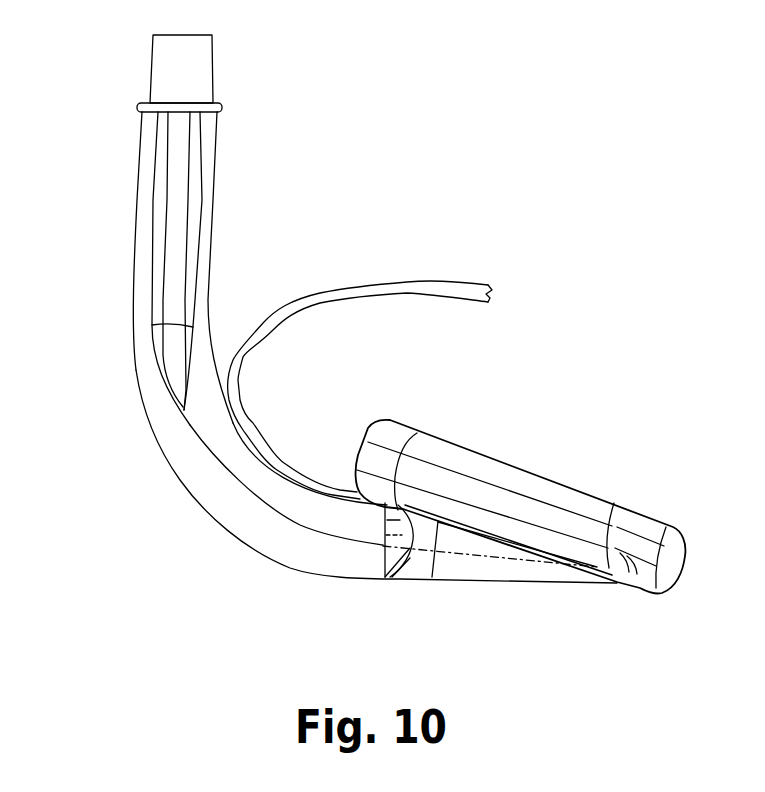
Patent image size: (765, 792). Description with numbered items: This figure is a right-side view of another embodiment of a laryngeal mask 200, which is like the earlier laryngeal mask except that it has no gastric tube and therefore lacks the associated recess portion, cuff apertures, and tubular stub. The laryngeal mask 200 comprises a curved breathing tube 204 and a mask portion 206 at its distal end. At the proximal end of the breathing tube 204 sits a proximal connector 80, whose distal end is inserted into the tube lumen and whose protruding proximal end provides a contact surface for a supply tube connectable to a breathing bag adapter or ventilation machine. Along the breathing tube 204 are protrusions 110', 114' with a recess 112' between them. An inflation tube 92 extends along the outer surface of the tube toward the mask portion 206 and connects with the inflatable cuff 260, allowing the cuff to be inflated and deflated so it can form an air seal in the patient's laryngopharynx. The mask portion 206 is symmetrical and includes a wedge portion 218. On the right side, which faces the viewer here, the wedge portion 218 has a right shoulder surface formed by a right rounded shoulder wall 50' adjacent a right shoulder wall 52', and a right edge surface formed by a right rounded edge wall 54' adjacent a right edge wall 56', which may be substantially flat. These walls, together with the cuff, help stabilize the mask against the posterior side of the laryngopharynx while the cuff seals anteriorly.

The proximal connector 80 is at (140, 45).
The inflation tube 92 is at (468, 283).
The protrusion 110' is at (136, 268).
The recess 112' is at (223, 261).
The protrusion 114' is at (231, 261).
The laryngeal mask 200 is at (115, 465).
The breathing tube 204 is at (115, 222).
The mask portion 206 is at (212, 606).
The wedge portion 218 is at (572, 608).
The inflatable cuff 260 is at (583, 505).
The right rounded shoulder wall 50' is at (396, 572).
The right shoulder wall 52' is at (420, 573).
The right rounded edge wall 54' is at (517, 582).
The right edge wall 56' is at (462, 581).